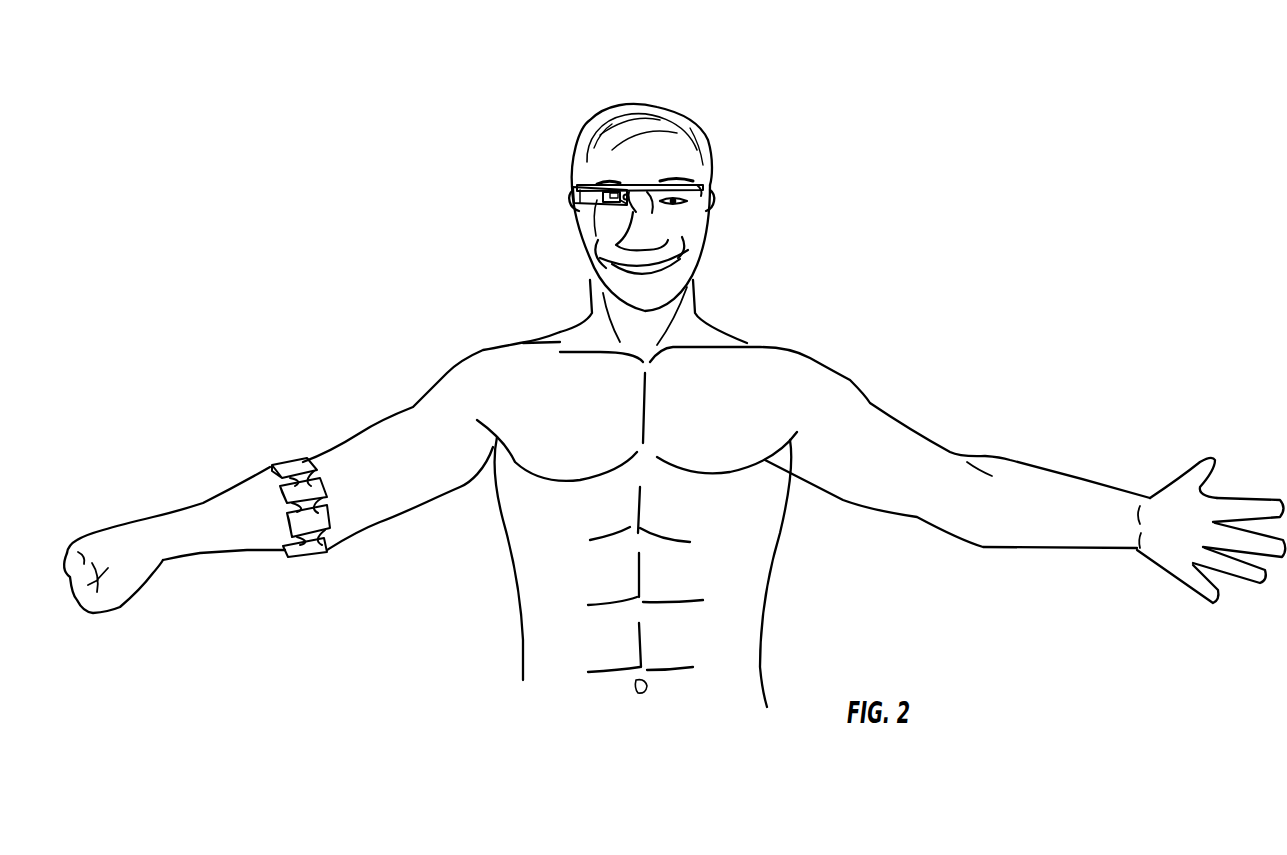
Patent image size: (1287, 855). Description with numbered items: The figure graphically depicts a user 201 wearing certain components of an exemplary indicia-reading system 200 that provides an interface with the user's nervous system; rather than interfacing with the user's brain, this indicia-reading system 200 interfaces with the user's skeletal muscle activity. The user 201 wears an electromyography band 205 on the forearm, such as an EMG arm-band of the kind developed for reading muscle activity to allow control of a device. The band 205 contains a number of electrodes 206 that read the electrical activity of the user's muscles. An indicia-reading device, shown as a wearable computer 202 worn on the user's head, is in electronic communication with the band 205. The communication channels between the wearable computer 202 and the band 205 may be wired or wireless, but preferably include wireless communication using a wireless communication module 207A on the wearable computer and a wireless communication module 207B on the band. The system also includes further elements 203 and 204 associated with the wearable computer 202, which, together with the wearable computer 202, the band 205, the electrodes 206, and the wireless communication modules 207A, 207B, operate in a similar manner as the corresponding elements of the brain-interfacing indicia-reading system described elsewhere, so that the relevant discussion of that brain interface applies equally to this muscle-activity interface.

The indicia-reading system 200 is at (775, 130).
The user 201 is at (615, 186).
The wearable computer 202 is at (573, 187).
The system element corresponding to element 103 of system 100 203 is at (633, 143).
The system element corresponding to element 104 of system 100 204 is at (597, 197).
The electromyography (EMG) band 205 is at (302, 504).
The electrodes 206 is at (282, 500).
The wireless communication module 207A is at (573, 195).
The wireless communication module 207B is at (313, 527).